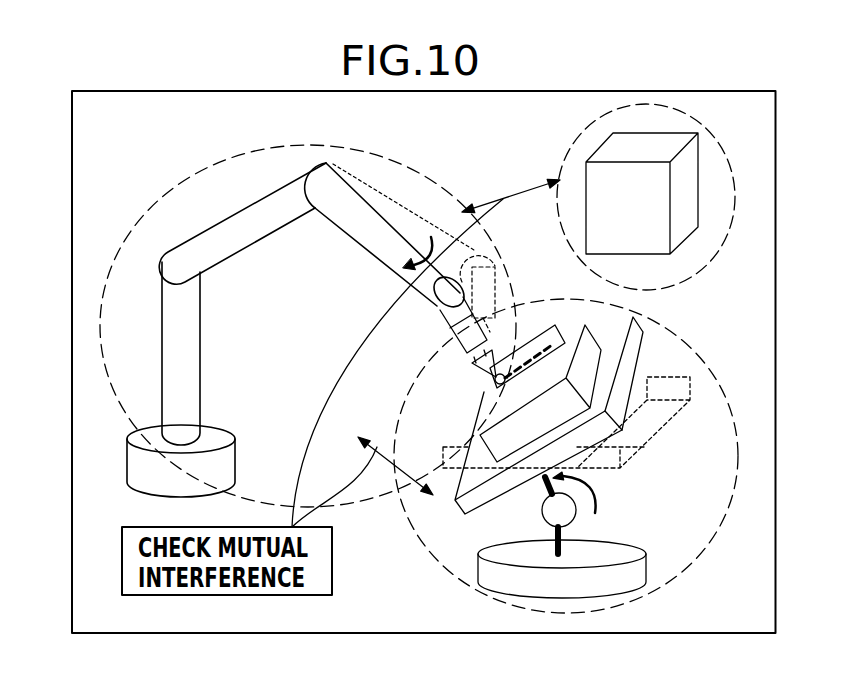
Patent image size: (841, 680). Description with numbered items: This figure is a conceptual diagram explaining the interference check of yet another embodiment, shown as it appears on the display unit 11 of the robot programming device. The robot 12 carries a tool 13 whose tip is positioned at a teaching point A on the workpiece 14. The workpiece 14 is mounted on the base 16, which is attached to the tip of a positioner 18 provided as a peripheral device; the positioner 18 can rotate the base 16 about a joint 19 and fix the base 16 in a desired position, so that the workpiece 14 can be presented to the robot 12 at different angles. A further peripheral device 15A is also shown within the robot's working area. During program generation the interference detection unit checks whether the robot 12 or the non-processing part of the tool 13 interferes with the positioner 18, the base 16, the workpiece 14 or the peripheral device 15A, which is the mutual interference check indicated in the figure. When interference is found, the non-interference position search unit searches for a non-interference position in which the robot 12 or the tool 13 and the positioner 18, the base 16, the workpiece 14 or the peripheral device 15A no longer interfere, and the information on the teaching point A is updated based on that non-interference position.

The display unit 11 is at (72, 502).
The robot 12 is at (255, 233).
The tool 13 is at (456, 325).
The workpiece 14 is at (494, 442).
The peripheral device 15A is at (685, 178).
The base 16 is at (620, 395).
The positioner 18 is at (627, 553).
The joint 19 is at (570, 517).
The teaching point A is at (490, 391).